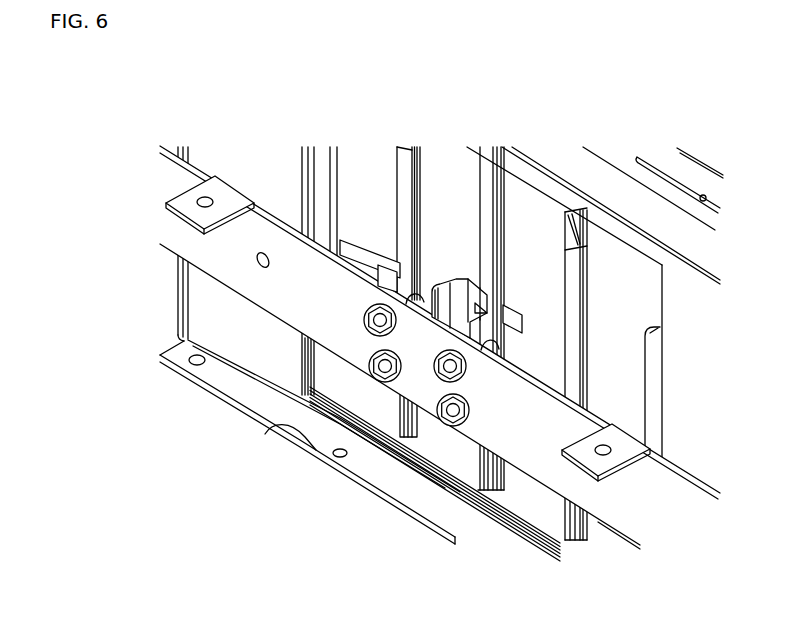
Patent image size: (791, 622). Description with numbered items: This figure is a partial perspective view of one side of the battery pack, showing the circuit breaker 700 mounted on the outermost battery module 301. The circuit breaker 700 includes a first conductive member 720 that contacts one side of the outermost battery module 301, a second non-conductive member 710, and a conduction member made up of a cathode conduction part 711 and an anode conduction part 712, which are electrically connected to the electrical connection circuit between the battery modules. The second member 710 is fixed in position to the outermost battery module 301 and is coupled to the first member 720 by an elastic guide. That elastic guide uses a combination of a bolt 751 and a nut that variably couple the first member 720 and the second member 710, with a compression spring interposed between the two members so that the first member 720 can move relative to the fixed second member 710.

The outermost battery module 301 is at (730, 192).
The circuit breaker 700 is at (374, 345).
The second non-conductive member 710 is at (195, 252).
The cathode conduction part 711 is at (184, 199).
The anode conduction part 712 is at (606, 465).
The first conductive member 720 is at (445, 282).
The bolt 751 is at (368, 371).